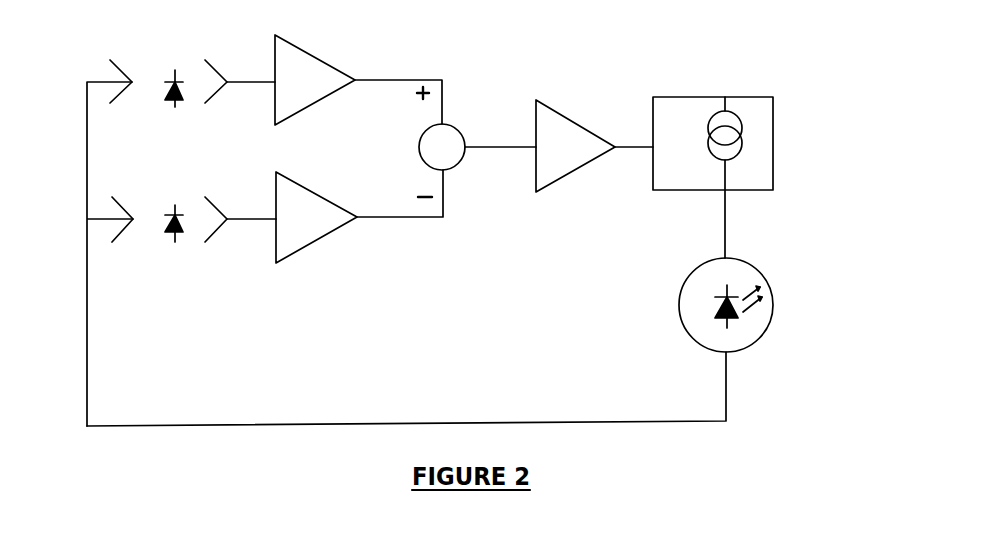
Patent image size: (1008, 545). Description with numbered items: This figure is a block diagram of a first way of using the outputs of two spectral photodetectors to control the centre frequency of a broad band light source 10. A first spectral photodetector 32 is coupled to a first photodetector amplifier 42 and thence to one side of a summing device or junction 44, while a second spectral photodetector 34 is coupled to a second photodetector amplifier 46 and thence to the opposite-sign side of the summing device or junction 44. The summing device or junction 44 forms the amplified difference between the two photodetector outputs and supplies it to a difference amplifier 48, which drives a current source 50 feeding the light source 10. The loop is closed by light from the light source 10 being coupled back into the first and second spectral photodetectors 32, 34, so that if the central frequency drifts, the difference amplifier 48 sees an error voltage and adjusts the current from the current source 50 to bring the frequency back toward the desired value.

The light source 10 is at (753, 267).
The first spectral photodetector 32 is at (172, 80).
The second spectral photodetector 34 is at (173, 235).
The first photodetector amplifier 42 is at (308, 77).
The summing device or junction 44 is at (427, 142).
The second photodetector amplifier 46 is at (308, 220).
The difference amplifier 48 is at (565, 153).
The current source 50 is at (658, 112).